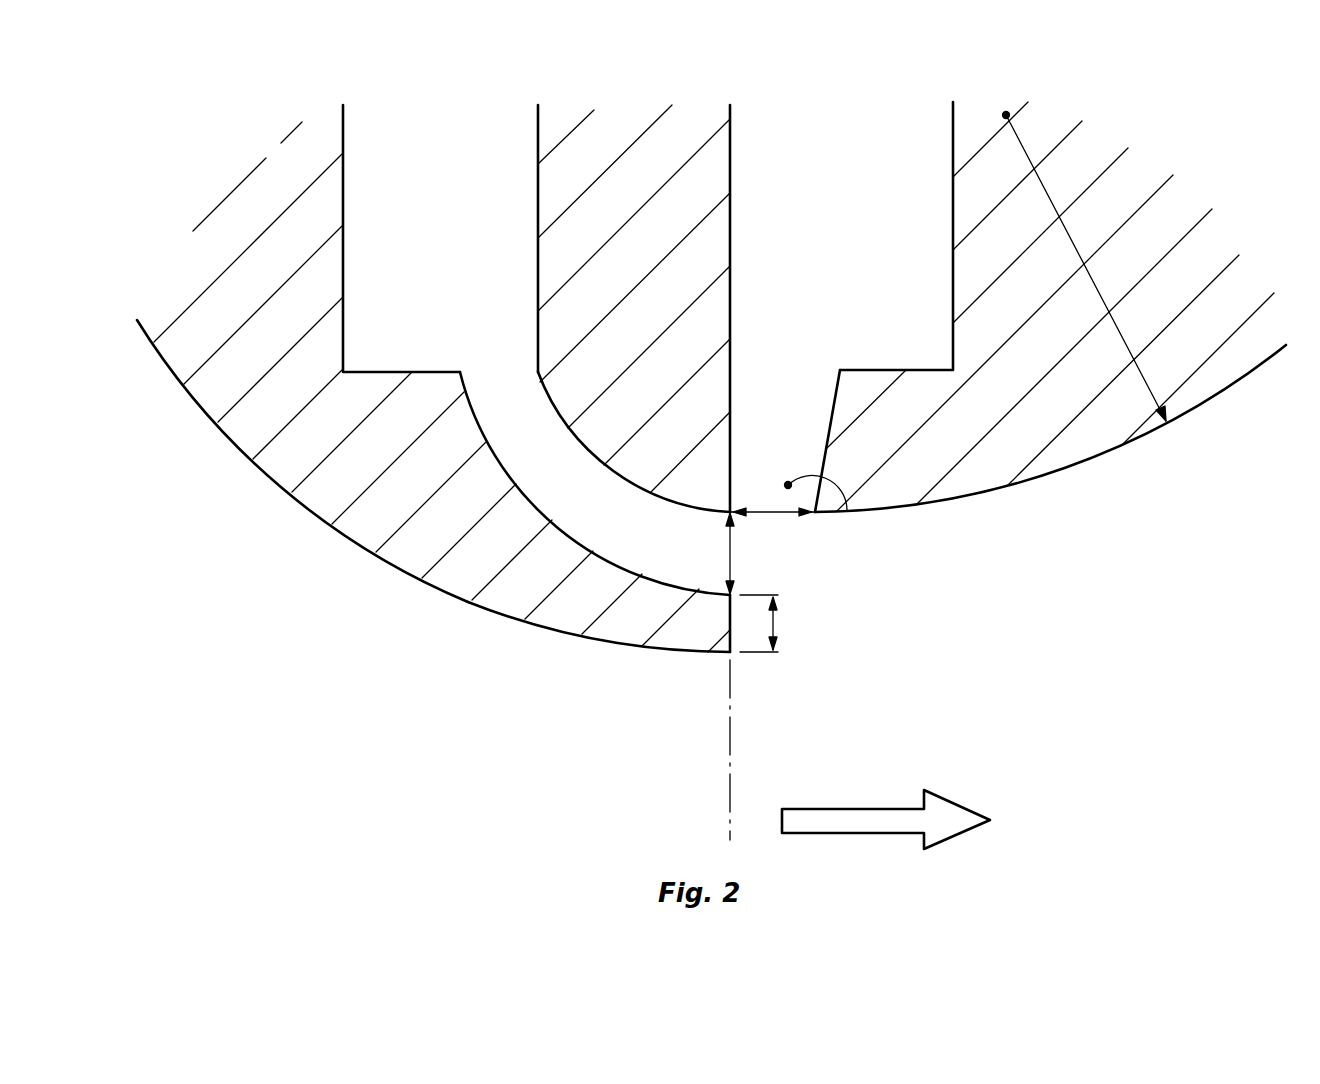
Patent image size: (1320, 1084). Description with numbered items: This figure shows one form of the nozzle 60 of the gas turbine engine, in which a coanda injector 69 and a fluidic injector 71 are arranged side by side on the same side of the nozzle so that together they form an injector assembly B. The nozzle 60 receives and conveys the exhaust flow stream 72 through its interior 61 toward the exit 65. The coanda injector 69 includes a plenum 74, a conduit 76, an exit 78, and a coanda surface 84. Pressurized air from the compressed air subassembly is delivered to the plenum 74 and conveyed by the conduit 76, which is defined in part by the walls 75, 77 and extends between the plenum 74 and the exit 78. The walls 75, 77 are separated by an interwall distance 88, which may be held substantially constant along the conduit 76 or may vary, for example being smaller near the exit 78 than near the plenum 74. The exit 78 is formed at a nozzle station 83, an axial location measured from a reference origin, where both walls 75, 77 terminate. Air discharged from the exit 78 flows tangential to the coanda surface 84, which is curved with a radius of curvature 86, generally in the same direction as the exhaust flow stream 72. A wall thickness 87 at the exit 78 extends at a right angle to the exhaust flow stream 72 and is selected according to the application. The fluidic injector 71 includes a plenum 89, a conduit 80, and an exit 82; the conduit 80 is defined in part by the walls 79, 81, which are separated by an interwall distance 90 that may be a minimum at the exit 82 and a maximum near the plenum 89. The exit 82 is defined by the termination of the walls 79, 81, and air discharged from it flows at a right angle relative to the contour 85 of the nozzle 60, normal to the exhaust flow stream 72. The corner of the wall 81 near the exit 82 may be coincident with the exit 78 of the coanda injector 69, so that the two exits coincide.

The nozzle 60 is at (253, 461).
The interior 61 is at (359, 751).
The exit 65 is at (1261, 637).
The coanda injector 69 is at (552, 679).
The fluidic injector 71 is at (938, 523).
The exhaust flow stream 72 is at (859, 809).
The plenum 74 is at (446, 254).
The wall 75 is at (578, 547).
The conduit 76 is at (564, 489).
The wall 77 is at (613, 466).
The exit 78 is at (712, 568).
The wall 79 is at (826, 443).
The conduit 80 is at (791, 434).
The wall 81 is at (727, 397).
The exit 82 is at (848, 512).
The nozzle station 83 is at (733, 738).
The coanda surface 84 is at (1075, 466).
The contour 85 is at (623, 648).
The radius of curvature 86 is at (1083, 264).
The wall thickness 87 is at (777, 622).
The interwall distance 88 is at (716, 549).
The plenum 89 is at (862, 240).
The interwall distance 90 is at (768, 514).
The injector assembly B is at (986, 619).